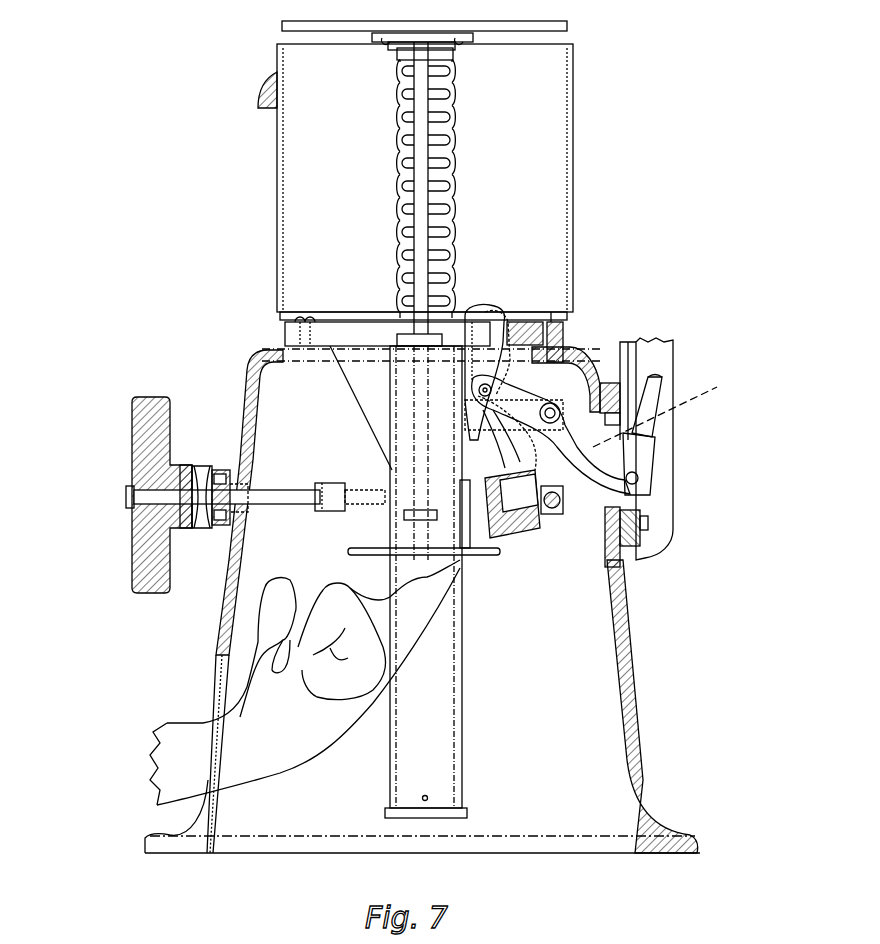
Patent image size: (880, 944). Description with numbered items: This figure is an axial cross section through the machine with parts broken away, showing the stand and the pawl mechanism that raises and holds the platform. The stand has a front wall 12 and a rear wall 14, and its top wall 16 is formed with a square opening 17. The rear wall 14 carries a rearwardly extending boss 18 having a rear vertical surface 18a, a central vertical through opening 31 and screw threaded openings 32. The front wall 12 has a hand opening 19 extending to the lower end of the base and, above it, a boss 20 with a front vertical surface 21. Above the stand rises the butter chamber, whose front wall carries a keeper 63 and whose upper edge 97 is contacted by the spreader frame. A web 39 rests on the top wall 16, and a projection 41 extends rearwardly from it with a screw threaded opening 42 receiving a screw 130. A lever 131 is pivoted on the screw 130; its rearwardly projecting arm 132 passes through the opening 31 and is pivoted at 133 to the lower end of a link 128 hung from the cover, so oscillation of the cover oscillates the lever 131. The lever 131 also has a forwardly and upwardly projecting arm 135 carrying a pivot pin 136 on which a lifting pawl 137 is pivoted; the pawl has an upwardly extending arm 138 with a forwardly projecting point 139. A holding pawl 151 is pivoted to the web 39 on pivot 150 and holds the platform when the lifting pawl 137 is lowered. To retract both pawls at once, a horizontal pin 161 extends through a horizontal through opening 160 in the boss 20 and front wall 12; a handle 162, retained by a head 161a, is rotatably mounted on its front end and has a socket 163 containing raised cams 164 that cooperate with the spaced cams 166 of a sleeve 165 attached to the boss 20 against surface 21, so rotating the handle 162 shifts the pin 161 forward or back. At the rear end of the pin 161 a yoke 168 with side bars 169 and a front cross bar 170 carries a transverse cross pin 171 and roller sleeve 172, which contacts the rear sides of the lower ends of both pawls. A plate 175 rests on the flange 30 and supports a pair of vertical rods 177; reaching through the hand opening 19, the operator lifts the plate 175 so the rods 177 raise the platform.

The upper edge of the butter chamber 97 is at (560, 44).
The keeper 63 is at (262, 92).
The vertical rods 177 is at (422, 156).
The forwardly projecting point 139 is at (463, 312).
The upwardly extending arm 138 is at (498, 314).
The top wall 16 is at (312, 357).
The square opening 17 is at (331, 357).
The front wall 12 is at (226, 608).
The hand opening 19 is at (212, 690).
The rear wall 14 is at (632, 620).
The handle 162 is at (132, 531).
The head 161a is at (128, 498).
The horizontal pin 161 is at (307, 505).
The raised cams 164 is at (183, 465).
The socket 163 is at (206, 520).
The spaced cams 166 is at (212, 470).
The front vertical surface 21 is at (216, 474).
The sleeve 165 is at (222, 524).
The horizontal through opening 160 is at (246, 511).
The boss 20 is at (248, 482).
The front cross bar 170 is at (330, 483).
The side bars 169 is at (352, 488).
The yoke 168 is at (371, 519).
The plate 175 is at (352, 556).
The web 39 is at (515, 371).
The projection 41 is at (566, 379).
The boss 18 is at (607, 382).
The screw 130 is at (562, 423).
The pivot pin 136 is at (479, 389).
The screw threaded opening 42 is at (553, 413).
The forwardly and upwardly projecting arm 135 is at (490, 400).
The pivot 150 is at (495, 426).
The lifting pawl 137 is at (504, 434).
The holding pawl 151 is at (505, 438).
The lever 131 is at (591, 490).
The transverse cross pin 171 is at (548, 515).
The roller sleeve 172 is at (556, 510).
The rear vertical surface 18a is at (634, 380).
The link 128 is at (656, 380).
The screw threaded openings 32 is at (665, 410).
The rearwardly projecting arm 132 is at (640, 460).
The pivot 133 is at (638, 478).
The central vertical through opening 31 is at (612, 497).
The flange 30 is at (630, 545).